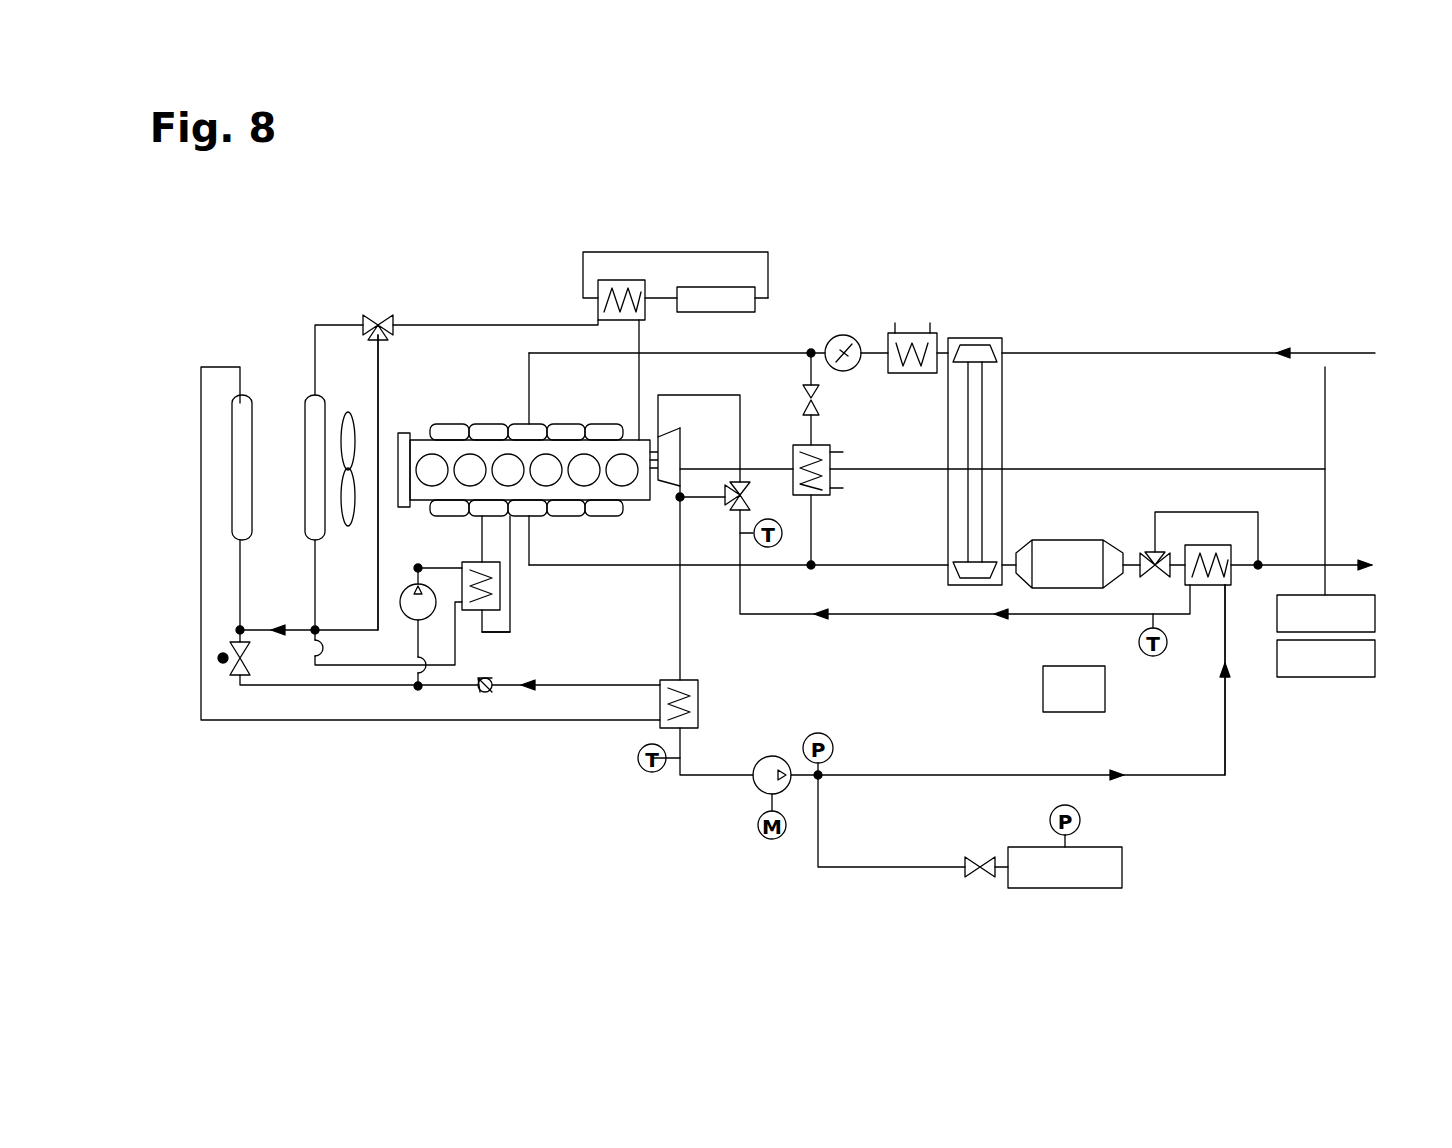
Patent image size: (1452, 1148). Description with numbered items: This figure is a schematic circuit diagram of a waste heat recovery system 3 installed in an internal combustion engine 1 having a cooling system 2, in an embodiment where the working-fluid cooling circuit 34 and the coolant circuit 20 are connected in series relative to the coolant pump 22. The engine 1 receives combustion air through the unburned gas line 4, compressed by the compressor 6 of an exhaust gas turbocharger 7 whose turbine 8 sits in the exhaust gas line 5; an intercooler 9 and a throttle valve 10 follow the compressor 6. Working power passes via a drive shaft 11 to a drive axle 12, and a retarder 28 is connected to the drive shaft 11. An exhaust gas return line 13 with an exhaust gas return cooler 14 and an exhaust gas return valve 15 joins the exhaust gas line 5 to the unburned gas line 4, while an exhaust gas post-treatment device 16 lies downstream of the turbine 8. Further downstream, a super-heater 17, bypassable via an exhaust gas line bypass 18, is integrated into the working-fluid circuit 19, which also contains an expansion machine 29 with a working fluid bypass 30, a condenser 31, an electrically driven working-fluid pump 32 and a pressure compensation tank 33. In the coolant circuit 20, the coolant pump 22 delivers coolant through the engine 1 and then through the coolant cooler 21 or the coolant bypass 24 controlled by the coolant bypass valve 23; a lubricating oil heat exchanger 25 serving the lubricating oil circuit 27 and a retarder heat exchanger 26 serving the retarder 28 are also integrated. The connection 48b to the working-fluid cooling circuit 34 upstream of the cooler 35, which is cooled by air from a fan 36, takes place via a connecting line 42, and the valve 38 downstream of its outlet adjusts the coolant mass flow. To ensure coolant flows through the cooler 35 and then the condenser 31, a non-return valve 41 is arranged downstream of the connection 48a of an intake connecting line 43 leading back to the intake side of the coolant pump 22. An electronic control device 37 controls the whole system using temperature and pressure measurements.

The internal combustion engine 1 is at (484, 424).
The cooling system 2 is at (468, 285).
The waste heat recovery system 3 is at (1280, 800).
The unburned gas line 4 is at (808, 350).
The exhaust gas line 5 is at (620, 565).
The compressor 6 is at (974, 345).
The exhaust gas turbocharger 7 is at (1004, 402).
The turbine 8 is at (975, 578).
The intercooler 9 is at (910, 333).
The throttle valve 10 is at (843, 335).
The drive shaft 11 is at (1128, 469).
The drive axle 12 is at (1327, 518).
The exhaust gas return line 13 is at (814, 532).
The exhaust gas return cooler 14 is at (832, 492).
The exhaust gas return valve 15 is at (822, 392).
The exhaust gas post-treatment device 16 is at (1082, 540).
The super-heater 17 is at (1233, 578).
The exhaust gas line bypass 18 is at (1205, 512).
The working-fluid circuit 19 is at (1228, 745).
The coolant circuit 20 is at (510, 325).
The coolant cooler 21 is at (302, 395).
The coolant pump 22 is at (434, 607).
The coolant bypass valve 23 is at (378, 322).
The coolant bypass 24 is at (380, 360).
The lubricating oil heat exchanger 25 is at (503, 588).
The retarder heat exchanger 26 is at (618, 280).
The lubricating oil circuit 27 is at (512, 628).
The retarder 28 is at (710, 287).
The expansion machine 29 is at (662, 488).
The working fluid bypass 30 is at (712, 500).
The condenser 31 is at (700, 692).
The working-fluid pump 32 is at (760, 790).
The pressure compensation tank 33 is at (1124, 858).
The working-fluid cooling circuit 34 is at (236, 720).
The cooler 35 is at (250, 395).
The fan 36 is at (344, 415).
The electronic control device 37 is at (1107, 680).
The valve 38 is at (220, 661).
The non-return valve 41 is at (495, 695).
The connecting line 42 is at (274, 628).
The intake connecting line 43 is at (445, 645).
The connection 48a is at (418, 688).
The connection 48b is at (315, 668).